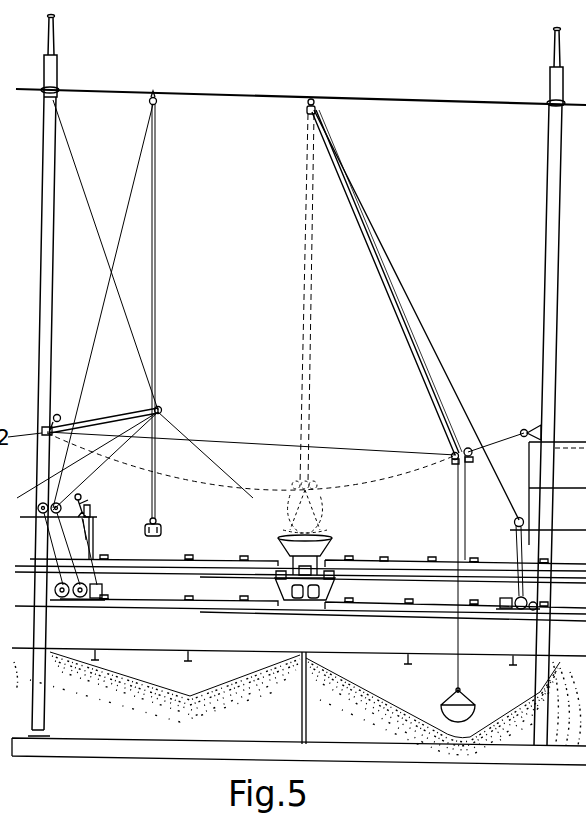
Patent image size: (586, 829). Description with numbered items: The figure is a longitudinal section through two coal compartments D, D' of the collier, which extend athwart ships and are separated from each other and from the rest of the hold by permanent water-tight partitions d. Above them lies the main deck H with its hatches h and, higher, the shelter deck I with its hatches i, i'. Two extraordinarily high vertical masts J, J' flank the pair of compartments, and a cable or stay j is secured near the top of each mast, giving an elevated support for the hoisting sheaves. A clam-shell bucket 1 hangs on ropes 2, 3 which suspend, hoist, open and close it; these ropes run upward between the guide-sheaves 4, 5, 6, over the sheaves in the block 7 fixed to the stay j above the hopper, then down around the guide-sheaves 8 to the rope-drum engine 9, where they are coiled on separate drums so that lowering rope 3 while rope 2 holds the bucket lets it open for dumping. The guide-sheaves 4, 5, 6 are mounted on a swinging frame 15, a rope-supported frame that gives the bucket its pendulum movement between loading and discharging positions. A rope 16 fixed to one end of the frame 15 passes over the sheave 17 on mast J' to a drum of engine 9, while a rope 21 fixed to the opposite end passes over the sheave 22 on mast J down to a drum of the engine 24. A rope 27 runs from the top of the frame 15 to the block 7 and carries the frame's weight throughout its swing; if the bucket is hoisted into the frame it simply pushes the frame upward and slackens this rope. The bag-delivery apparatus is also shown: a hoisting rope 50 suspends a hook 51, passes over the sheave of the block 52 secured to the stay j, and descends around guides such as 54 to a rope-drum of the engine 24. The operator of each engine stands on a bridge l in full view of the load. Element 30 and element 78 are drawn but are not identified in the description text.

The clam-shell bucket 1 is at (470, 706).
The rope 2 is at (456, 631).
The rope 3 is at (463, 651).
The guide-sheave 4 is at (468, 448).
The guide-sheave 5 is at (452, 452).
The guide-sheave 6 is at (472, 458).
The block 7 is at (314, 104).
The guide-sheaves 8 is at (514, 520).
The rope-drum engine 9 is at (540, 603).
The swinging frame 15 is at (453, 463).
The rope 16 is at (496, 441).
The sheave 17 is at (532, 434).
The rope 21 is at (196, 430).
The sheave 22 is at (60, 416).
The engine 24 is at (108, 540).
The rope 27 is at (432, 387).
The hopper car 30 is at (330, 547).
The hoisting rope 50 is at (157, 378).
The hook 51 is at (160, 516).
The block 52 is at (160, 104).
The guide 54 is at (54, 505).
The hoisting rope 78 is at (157, 280).
The mast J is at (32, 376).
The mast J' is at (540, 387).
The cable or stay j is at (452, 106).
The shelter deck I is at (240, 558).
The hatch i is at (387, 545).
The hatch i' is at (436, 544).
The main deck H is at (172, 603).
The hatch h is at (270, 604).
The coal compartment D is at (299, 696).
The coal compartment D' is at (443, 706).
The water tight partition d is at (50, 741).
The bridge l is at (79, 532).